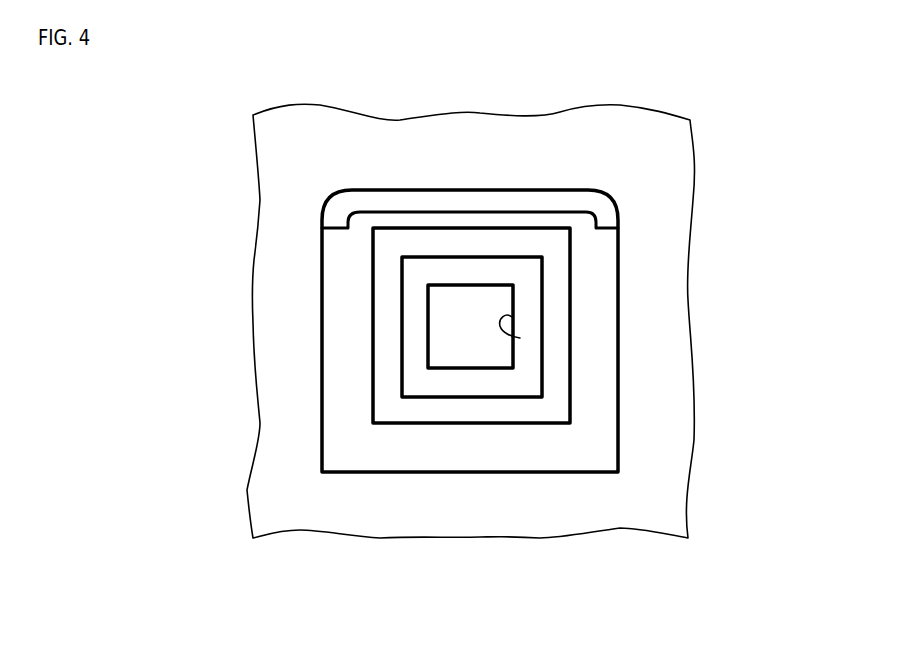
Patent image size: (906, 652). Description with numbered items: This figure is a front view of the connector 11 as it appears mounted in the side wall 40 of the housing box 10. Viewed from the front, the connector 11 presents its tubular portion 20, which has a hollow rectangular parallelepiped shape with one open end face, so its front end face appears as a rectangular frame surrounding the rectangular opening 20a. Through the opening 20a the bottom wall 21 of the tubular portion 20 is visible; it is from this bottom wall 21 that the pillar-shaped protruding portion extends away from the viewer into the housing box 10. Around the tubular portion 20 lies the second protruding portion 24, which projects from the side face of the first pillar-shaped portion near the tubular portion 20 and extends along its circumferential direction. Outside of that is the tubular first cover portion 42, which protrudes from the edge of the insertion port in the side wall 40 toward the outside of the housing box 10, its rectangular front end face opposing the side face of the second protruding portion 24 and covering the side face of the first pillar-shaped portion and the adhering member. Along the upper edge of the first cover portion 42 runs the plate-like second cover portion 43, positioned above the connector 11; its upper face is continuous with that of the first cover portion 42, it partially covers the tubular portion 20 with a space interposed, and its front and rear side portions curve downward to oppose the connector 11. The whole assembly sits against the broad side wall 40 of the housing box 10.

The housing box 10 is at (455, 174).
The side wall 40 is at (560, 140).
The second cover portion 43 is at (603, 195).
The first cover portion 42 is at (598, 275).
The rectangular opening 20a is at (520, 338).
The second protruding portion 24 is at (558, 382).
The connector 11 is at (426, 437).
The tubular portion 20 is at (470, 383).
The bottom wall 21 is at (488, 355).